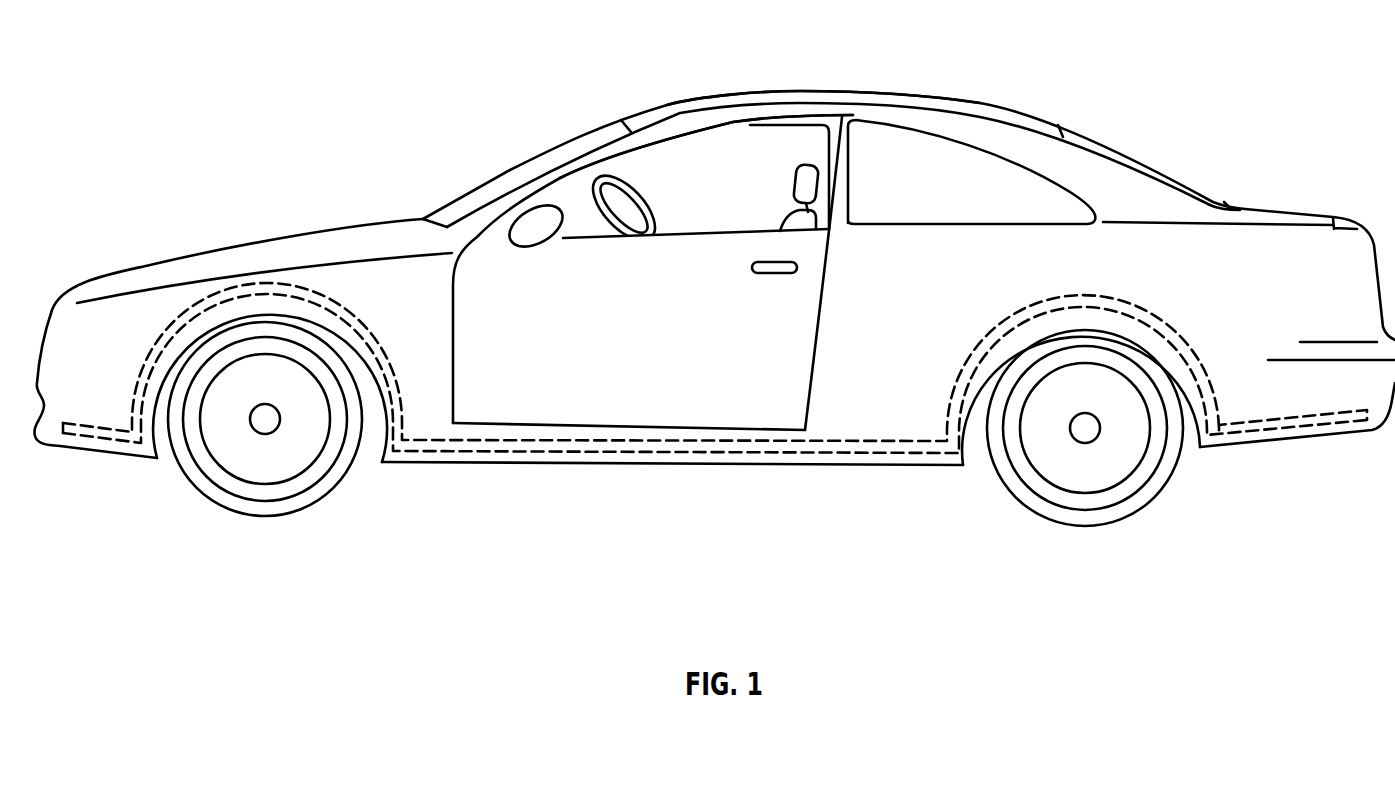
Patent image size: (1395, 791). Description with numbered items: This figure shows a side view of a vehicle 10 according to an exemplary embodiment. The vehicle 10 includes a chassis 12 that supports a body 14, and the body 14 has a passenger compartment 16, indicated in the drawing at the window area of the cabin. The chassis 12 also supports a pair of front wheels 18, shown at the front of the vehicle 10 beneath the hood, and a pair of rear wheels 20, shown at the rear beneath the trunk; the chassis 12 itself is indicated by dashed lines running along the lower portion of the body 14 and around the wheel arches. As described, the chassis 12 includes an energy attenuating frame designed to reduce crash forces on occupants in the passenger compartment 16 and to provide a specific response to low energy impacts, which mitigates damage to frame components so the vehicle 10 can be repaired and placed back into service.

The vehicle 10 is at (554, 58).
The chassis 12 is at (590, 452).
The body 14 is at (853, 107).
The passenger compartment 16 is at (723, 145).
The front wheels 18 is at (176, 502).
The rear wheels 20 is at (1172, 522).